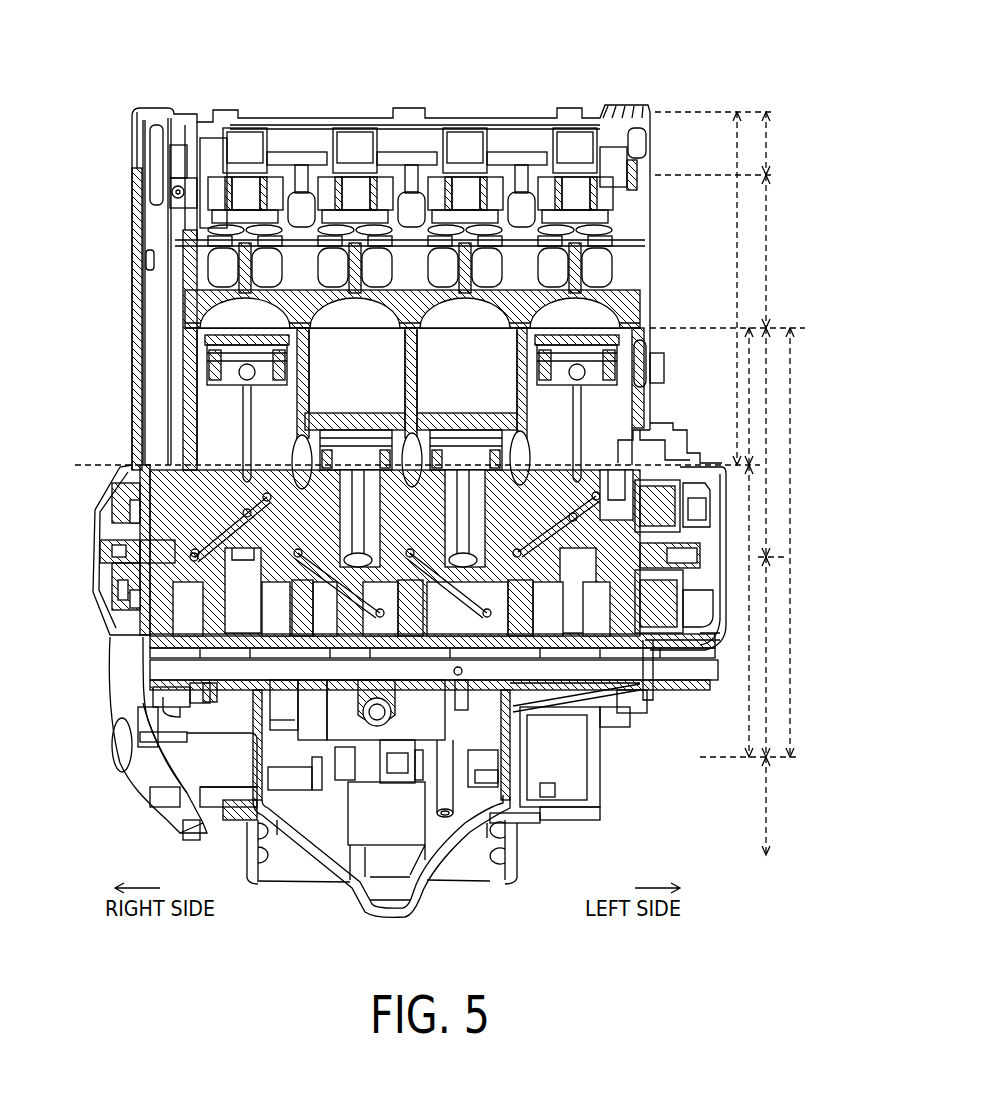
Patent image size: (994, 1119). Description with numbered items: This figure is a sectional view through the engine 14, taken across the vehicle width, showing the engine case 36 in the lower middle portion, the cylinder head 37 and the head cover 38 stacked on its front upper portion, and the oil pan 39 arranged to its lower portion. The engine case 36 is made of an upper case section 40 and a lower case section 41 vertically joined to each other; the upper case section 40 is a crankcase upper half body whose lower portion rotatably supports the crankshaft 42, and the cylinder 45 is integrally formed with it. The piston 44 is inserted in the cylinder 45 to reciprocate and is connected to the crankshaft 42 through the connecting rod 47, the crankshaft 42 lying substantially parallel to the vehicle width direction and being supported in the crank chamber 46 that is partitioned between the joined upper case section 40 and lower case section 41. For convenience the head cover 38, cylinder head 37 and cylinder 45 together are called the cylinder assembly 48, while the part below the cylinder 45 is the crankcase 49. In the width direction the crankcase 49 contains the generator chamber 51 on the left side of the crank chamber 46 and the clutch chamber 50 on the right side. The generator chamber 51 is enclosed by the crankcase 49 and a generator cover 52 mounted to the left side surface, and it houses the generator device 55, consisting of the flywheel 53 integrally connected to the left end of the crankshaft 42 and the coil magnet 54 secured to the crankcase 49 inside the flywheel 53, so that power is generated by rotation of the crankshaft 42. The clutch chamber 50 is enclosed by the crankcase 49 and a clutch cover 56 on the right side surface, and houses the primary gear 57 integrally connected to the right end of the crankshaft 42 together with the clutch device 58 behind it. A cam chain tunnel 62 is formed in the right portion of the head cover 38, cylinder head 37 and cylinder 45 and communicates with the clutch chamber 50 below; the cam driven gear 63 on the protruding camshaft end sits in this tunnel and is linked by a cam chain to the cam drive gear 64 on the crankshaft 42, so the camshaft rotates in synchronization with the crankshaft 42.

The engine 14 is at (262, 73).
The engine case 36 is at (790, 362).
The cylinder head 37 is at (768, 217).
The head cover 38 is at (767, 135).
The oil pan 39 is at (770, 793).
The upper case section 40 is at (767, 442).
The lower case section 41 is at (770, 597).
The crankshaft 42 is at (433, 615).
The piston 44 is at (222, 358).
The cylinder 45 is at (750, 402).
The crank chamber 46 is at (250, 645).
The connecting rod 47 is at (236, 428).
The cylinder assembly 48 is at (733, 225).
The crankcase 49 is at (750, 668).
The clutch chamber 50 is at (105, 545).
The generator chamber 51 is at (697, 617).
The generator cover 52 is at (727, 610).
The flywheel 53 is at (706, 456).
The coil magnet 54 is at (658, 617).
The generator device 55 is at (725, 454).
The clutch cover 56 is at (93, 506).
The primary gear 57 is at (110, 600).
The clutch device 58 is at (153, 615).
The cam chain tunnel 62 is at (145, 262).
The cam driven gear 63 is at (137, 167).
The cam drive gear 64 is at (157, 545).